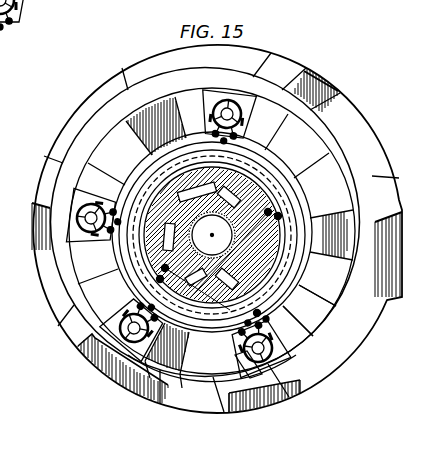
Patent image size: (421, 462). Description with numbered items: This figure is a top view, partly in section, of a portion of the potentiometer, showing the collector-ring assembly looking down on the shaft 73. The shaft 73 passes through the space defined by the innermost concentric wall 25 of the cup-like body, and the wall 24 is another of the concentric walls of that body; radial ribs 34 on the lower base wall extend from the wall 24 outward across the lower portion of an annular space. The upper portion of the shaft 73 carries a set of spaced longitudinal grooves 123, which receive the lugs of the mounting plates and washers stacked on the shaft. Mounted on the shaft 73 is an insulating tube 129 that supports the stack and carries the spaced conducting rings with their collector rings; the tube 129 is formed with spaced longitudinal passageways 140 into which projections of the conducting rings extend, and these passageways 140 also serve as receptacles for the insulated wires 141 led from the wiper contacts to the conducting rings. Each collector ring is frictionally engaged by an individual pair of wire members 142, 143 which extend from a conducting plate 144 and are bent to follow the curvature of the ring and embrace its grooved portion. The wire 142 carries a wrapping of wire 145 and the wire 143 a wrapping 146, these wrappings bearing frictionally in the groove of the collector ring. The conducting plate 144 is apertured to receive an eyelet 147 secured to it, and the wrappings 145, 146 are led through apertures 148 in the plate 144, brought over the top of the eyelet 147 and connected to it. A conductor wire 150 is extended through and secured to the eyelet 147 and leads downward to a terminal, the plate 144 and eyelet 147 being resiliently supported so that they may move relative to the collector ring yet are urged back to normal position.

The concentric wall 24 is at (360, 320).
The ribs 34 is at (297, 75).
The concentric wall 25 is at (313, 218).
The shaft 73 is at (255, 242).
The spaced grooves 123 is at (237, 197).
The insulating tube 129 is at (178, 175).
The longitudinal passageways 140 is at (268, 212).
The insulated wires 141 is at (277, 215).
The wire member 142 is at (257, 313).
The wire member 143 is at (147, 188).
The conducting plate 144 is at (280, 384).
The wire wrapping 145 is at (287, 277).
The wire wrapping 146 is at (182, 380).
The eyelet 147 is at (110, 387).
The apertures 148 is at (292, 318).
The conductor wire 150 is at (237, 363).